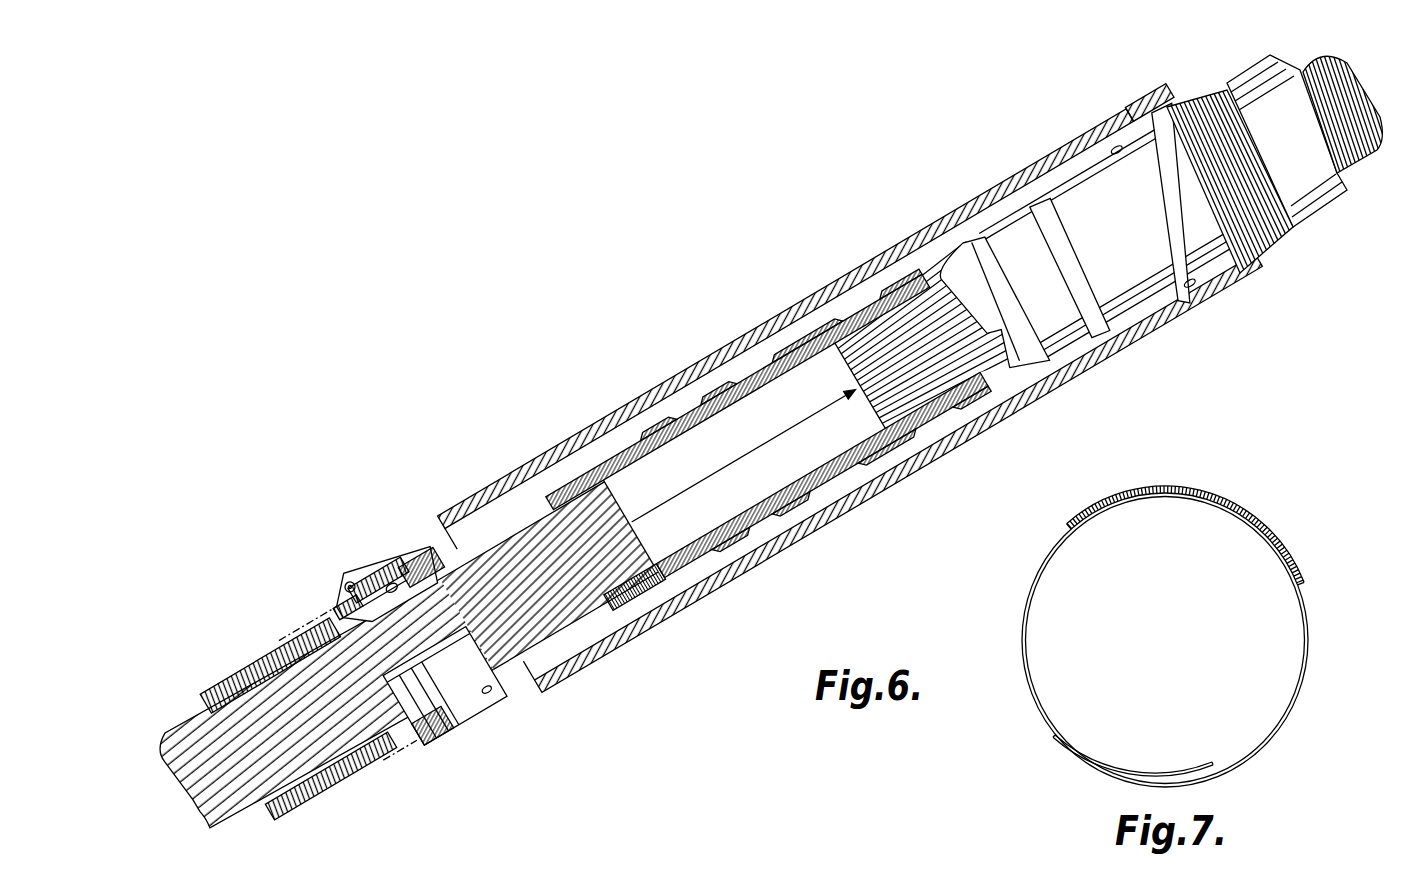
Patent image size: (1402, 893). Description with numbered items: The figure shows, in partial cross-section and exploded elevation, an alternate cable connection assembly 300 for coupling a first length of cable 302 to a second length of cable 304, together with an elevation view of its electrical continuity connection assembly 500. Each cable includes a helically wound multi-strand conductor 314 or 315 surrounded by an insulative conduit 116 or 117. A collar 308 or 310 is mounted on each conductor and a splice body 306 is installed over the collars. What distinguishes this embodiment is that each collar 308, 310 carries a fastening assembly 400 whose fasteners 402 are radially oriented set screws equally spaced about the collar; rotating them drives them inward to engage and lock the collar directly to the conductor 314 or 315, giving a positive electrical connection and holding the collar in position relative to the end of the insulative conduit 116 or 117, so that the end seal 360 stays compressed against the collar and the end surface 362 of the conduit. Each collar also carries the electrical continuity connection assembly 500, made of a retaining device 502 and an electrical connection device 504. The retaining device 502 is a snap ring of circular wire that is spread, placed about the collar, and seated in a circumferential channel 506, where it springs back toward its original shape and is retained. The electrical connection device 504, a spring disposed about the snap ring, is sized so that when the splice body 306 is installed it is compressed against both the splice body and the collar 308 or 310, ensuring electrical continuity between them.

In FIG. 6, the insulative conduit 116 is at (1255, 70).
In FIG. 6, the insulative conduit 117 is at (222, 668).
In FIG. 6, the cable connection assembly 300 is at (503, 198).
In FIG. 6, the first length of cable 302 is at (1328, 274).
In FIG. 6, the second length of cable 304 is at (399, 476).
In FIG. 6, the splice body 306 is at (573, 440).
In FIG. 6, the collar 308 is at (1127, 116).
In FIG. 6, the collar 310 is at (440, 554).
In FIG. 6, the conductor 314 is at (966, 432).
In FIG. 6, the conductor 315 is at (505, 558).
In FIG. 6, the end seal 360 is at (340, 606).
In FIG. 6, the end surface 362 is at (385, 748).
In FIG. 6, the fastening assembly 400 is at (375, 543).
In FIG. 6, the fastener 402 is at (405, 548).
In FIG. 6, the electrical continuity connection assembly 500 is at (347, 570).
In FIG. 7, the electrical continuity connection assembly 500 is at (1315, 762).
In FIG. 7, the retaining device 502 is at (1294, 699).
In FIG. 6, the electrical connection device 504 is at (456, 738).
In FIG. 7, the electrical connection device 504 is at (1263, 530).
In FIG. 6, the channel 506 is at (346, 582).